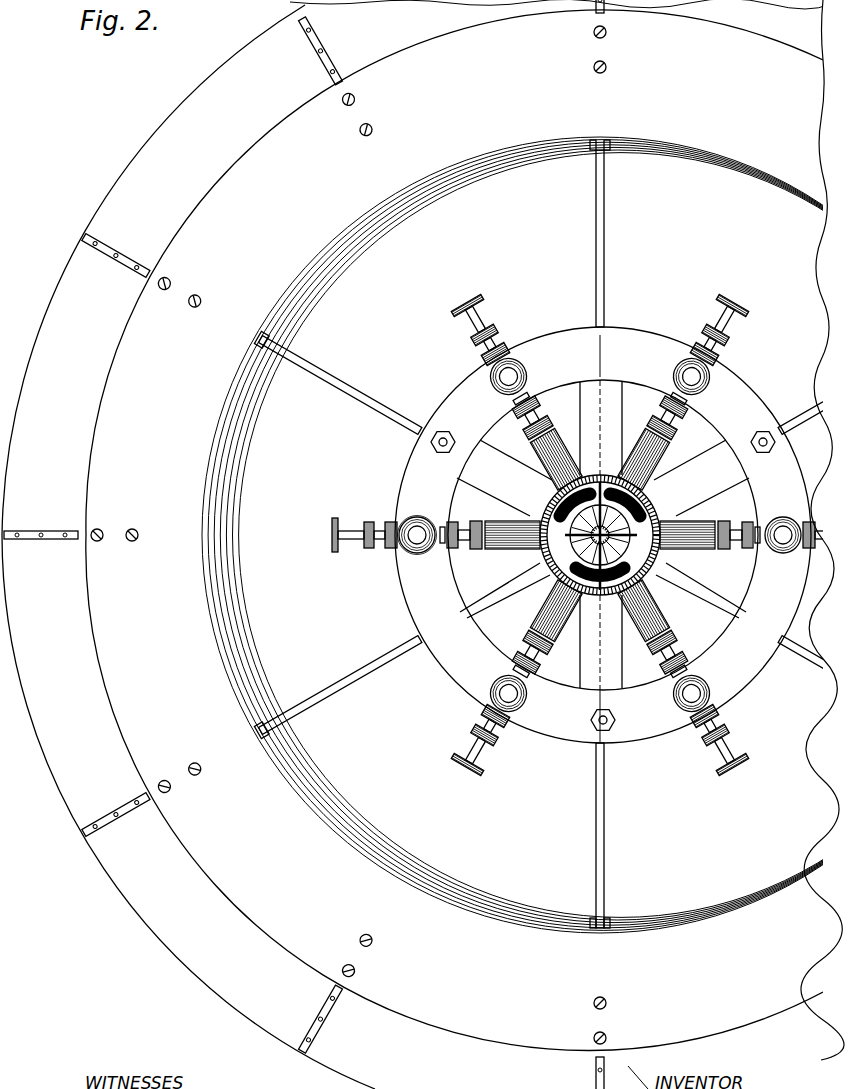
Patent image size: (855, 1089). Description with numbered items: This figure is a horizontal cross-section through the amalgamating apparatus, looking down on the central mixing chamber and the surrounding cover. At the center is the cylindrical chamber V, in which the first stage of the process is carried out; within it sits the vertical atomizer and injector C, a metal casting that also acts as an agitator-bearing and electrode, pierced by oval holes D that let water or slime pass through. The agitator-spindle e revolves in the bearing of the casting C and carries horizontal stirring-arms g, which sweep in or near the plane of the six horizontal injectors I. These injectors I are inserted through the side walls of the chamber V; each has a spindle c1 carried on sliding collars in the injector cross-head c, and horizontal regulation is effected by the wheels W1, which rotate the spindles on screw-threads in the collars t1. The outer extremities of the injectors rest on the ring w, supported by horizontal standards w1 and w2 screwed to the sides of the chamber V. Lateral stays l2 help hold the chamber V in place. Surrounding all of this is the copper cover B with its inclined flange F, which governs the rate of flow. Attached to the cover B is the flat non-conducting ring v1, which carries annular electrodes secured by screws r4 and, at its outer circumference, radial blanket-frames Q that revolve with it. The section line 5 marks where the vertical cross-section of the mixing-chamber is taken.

The copper cover B is at (272, 547).
The flange F is at (242, 446).
The lateral stays l2 is at (360, 677).
The radial blanket-frames Q is at (50, 532).
The screws r4 is at (348, 535).
The flat ring v1 is at (454, 530).
The wheels W1 is at (590, 531).
The collars t1 is at (597, 525).
The horizontal injectors I is at (600, 533).
The section line 5 5 is at (599, 538).
The ring w is at (603, 566).
The horizontal standards w1 is at (504, 478).
The horizontal standards w2 is at (701, 478).
The spindle c1 is at (476, 536).
The injector cross-head c is at (421, 517).
The chamber V is at (556, 502).
The oval holes D is at (650, 503).
The vertical atomizer and injector C is at (596, 535).
The agitator-spindle e is at (604, 535).
The horizontal stirring-arms g is at (601, 536).